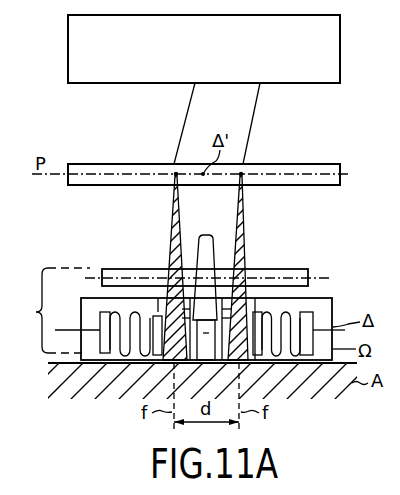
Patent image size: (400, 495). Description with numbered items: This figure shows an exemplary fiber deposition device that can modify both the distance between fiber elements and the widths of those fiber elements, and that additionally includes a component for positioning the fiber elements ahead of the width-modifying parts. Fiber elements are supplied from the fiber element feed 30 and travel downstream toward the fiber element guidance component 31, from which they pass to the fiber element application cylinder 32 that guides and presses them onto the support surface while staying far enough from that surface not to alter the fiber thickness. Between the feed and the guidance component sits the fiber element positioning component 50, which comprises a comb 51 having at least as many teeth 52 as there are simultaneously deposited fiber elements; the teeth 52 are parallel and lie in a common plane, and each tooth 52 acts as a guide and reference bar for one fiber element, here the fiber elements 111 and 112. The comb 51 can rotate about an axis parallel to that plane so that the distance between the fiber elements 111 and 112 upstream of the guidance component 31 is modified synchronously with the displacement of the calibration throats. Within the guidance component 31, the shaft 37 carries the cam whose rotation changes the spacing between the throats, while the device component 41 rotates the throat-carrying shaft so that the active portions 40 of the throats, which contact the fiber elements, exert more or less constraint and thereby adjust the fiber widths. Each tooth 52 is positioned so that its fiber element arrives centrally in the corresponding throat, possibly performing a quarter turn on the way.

The fiber element feed 30 is at (218, 56).
The fiber element positioning component 50 is at (353, 155).
The comb 51 is at (83, 182).
The teeth 52 is at (243, 176).
The fiber element 111 is at (169, 240).
The fiber element 112 is at (247, 235).
The shaft 37 is at (298, 270).
The fiber element application cylinder 32 is at (332, 306).
The device component 41 is at (99, 322).
The fiber element guidance component 31 is at (51, 310).
The active portions 40 is at (150, 368).